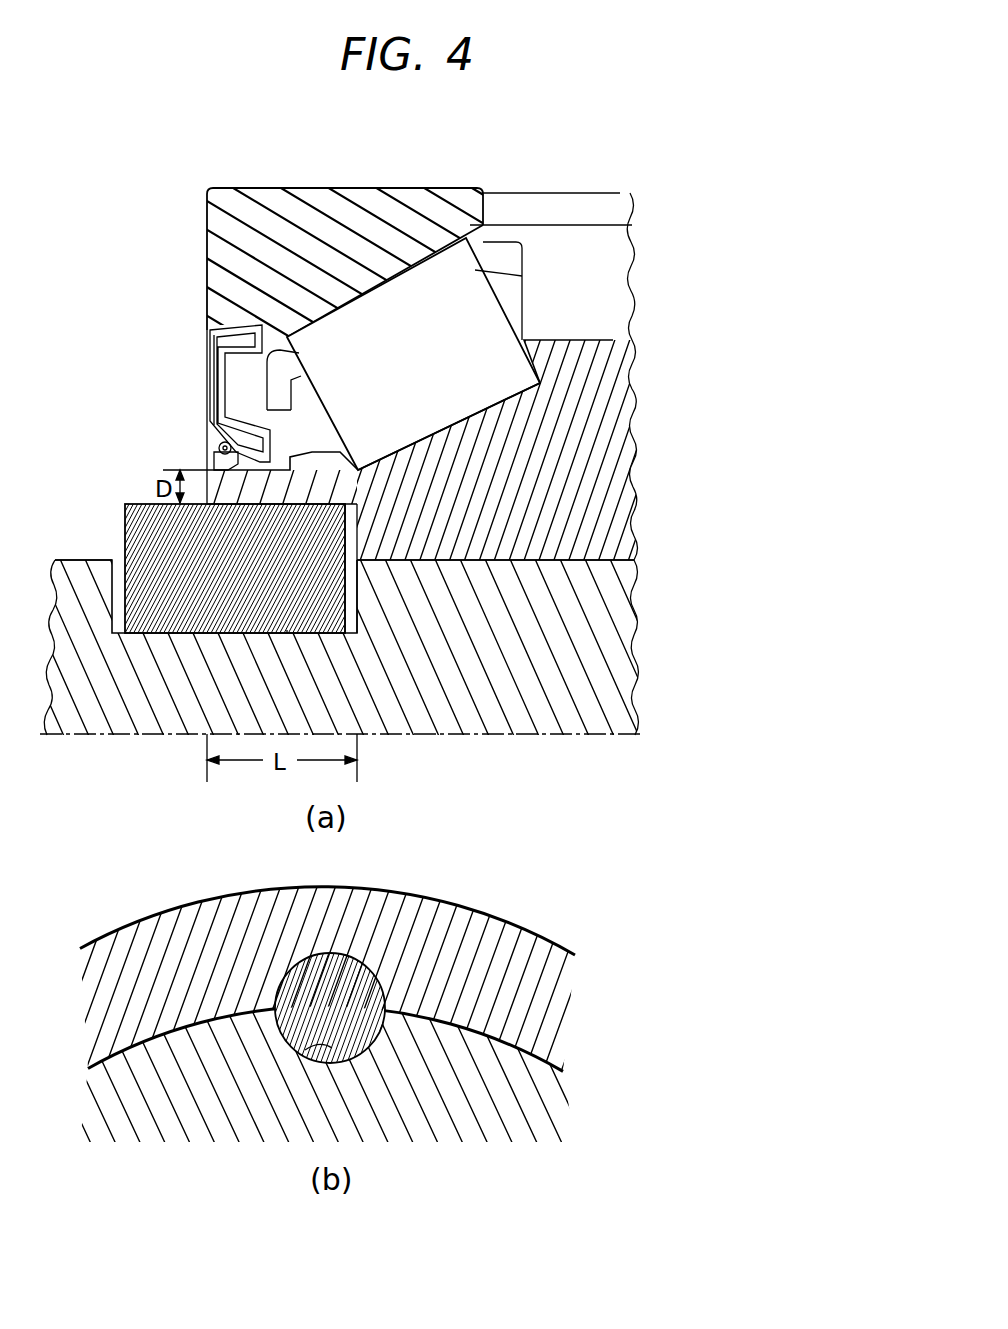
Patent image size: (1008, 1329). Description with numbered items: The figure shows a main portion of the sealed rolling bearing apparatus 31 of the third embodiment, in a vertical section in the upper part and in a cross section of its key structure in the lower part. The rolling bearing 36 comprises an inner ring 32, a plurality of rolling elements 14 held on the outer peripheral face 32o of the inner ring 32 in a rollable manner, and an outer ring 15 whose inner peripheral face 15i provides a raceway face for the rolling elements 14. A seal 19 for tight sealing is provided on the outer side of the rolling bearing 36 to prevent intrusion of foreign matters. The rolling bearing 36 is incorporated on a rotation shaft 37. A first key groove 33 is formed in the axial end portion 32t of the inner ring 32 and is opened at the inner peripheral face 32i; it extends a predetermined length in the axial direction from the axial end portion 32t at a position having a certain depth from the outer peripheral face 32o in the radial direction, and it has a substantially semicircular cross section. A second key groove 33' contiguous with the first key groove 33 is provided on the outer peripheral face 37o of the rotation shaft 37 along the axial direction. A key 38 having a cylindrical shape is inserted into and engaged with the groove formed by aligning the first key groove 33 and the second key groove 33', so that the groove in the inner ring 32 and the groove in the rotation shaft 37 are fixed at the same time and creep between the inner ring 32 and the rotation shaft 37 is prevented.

The rolling elements 14 is at (490, 307).
The outer ring 15 is at (277, 285).
The inner peripheral face 15i is at (388, 294).
The seal 19 is at (220, 362).
The sealed rolling bearing apparatus 31 is at (103, 322).
The inner ring 32 is at (577, 497).
The outer peripheral face 32o is at (443, 410).
The inner peripheral face 32i is at (503, 562).
The axial end portion 32t is at (211, 488).
The first key groove 33 is at (268, 765).
The second key groove 33' is at (198, 850).
The rolling bearing 36 is at (652, 340).
The rotation shaft 37 is at (410, 640).
The outer peripheral face 37o is at (387, 558).
The key 38 is at (177, 550).